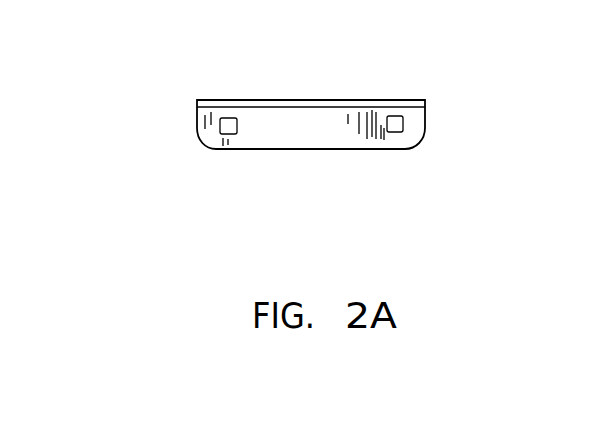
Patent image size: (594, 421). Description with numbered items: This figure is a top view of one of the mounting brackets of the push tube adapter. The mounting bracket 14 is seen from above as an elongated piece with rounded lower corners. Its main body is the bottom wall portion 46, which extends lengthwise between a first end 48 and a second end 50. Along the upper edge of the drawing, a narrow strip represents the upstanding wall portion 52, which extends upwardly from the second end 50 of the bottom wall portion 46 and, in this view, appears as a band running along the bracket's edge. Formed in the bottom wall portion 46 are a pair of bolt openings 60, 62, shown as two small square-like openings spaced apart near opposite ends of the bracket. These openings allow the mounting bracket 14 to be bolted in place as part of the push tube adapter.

The mounting bracket 14 is at (269, 181).
The bottom wall portion 46 is at (317, 150).
The first end 48 is at (370, 149).
The second end 50 is at (405, 107).
The upstanding wall portion 52 is at (313, 100).
The bolt opening 60 is at (226, 131).
The bolt opening 62 is at (399, 126).